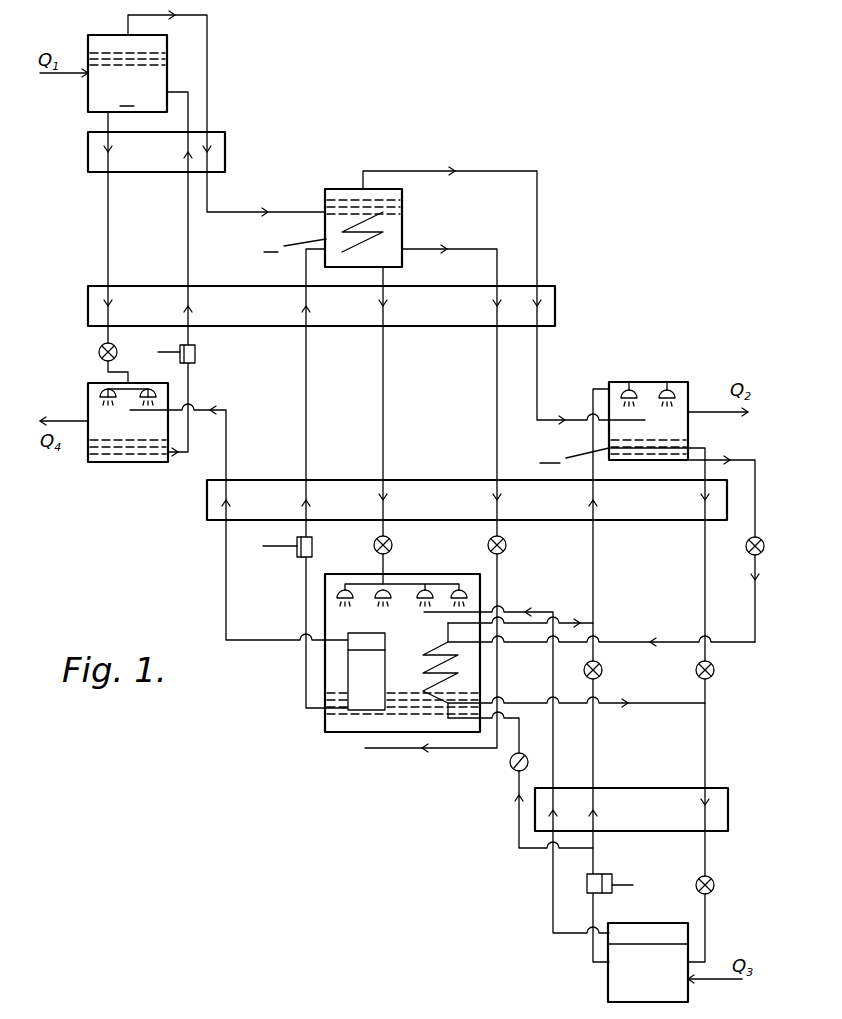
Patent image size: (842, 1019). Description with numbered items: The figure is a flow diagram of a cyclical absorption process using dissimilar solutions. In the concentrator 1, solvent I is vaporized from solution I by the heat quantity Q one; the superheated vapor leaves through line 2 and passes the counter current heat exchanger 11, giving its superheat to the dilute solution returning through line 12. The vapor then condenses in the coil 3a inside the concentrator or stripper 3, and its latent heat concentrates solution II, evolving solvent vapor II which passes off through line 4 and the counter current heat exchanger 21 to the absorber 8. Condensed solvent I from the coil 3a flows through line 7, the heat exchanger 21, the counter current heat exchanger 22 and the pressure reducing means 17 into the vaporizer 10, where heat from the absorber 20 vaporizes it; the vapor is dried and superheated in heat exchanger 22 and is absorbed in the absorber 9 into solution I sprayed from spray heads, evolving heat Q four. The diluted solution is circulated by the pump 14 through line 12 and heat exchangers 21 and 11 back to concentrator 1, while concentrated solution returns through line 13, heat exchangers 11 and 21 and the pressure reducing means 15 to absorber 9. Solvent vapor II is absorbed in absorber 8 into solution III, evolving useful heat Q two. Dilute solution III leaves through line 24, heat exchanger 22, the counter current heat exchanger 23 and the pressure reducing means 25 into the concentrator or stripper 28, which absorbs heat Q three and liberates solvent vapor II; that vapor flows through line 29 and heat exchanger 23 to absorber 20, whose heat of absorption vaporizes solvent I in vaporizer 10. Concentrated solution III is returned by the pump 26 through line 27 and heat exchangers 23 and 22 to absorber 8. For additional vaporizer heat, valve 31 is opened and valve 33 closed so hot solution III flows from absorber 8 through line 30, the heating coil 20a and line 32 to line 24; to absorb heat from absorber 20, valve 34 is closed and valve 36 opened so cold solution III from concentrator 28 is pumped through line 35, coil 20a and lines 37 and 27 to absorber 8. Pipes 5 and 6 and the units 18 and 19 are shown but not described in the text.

The concentrator 1 is at (88, 97).
The line 2 is at (208, 72).
The concentrator or stripper 3 is at (404, 230).
The coil 3a is at (360, 253).
The line 4 is at (539, 250).
The conduit from vessel 3 to vessel 20 5 is at (380, 385).
The return conduit from vessel 10 to vessel 3 6 is at (303, 385).
The line 7 is at (494, 385).
The absorber 8 is at (604, 423).
The absorber 9 is at (218, 511).
The vaporizer 10 is at (366, 671).
The counter current heat exchanger 11 is at (156, 152).
The line 12 is at (185, 239).
The line 13 is at (104, 239).
The pump 14 is at (196, 356).
The pressure reducing means 15 is at (99, 352).
The pressure reducing means 17 is at (488, 545).
The pump 18 is at (294, 556).
The throttle valve 19 is at (374, 545).
The absorber 20 is at (402, 653).
The heating coil 20a is at (452, 657).
The counter current heat exchanger 21 is at (321, 306).
The counter current heat exchanger 22 is at (467, 500).
The counter current heat exchanger 23 is at (631, 809).
The line 24 is at (702, 556).
The pressure reducing means 25 is at (715, 875).
The pump 26 is at (620, 886).
The line 27 is at (591, 554).
The concentrator or stripper 28 is at (648, 962).
The line 29 is at (553, 906).
The line 30 is at (753, 614).
The valve 31 is at (726, 514).
The line 32 is at (680, 705).
The valve 33 is at (717, 667).
The valve 34 is at (605, 669).
The line 35 is at (538, 849).
The valve 36 is at (510, 763).
The line 37 is at (568, 620).